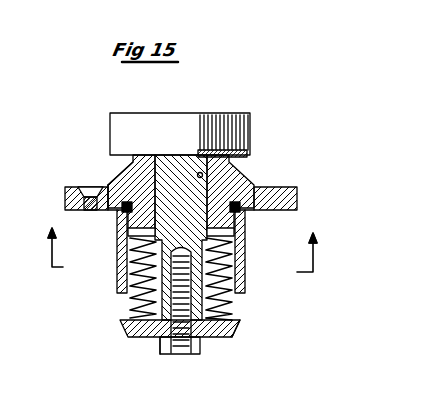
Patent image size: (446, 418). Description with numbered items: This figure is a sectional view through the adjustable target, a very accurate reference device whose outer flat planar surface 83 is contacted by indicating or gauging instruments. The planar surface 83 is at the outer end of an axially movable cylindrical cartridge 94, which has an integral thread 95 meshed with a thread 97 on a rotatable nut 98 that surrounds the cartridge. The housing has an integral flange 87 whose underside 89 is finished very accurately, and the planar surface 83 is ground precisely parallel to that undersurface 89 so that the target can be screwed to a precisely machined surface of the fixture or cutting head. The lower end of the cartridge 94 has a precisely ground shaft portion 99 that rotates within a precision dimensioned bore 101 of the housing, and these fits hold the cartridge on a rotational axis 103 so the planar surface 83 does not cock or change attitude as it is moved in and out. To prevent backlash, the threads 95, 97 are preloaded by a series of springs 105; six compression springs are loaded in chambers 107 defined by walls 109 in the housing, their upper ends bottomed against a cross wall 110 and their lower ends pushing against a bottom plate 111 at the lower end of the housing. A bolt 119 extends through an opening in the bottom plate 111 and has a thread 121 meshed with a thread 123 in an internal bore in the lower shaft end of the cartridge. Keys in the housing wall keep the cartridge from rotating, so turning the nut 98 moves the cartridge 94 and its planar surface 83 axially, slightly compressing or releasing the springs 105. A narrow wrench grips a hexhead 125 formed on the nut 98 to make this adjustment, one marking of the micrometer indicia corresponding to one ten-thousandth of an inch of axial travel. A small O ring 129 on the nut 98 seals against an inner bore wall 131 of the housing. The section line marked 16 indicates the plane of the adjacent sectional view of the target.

The outer flat planar surface 83 is at (148, 113).
The cylindrical cartridge 94 is at (186, 170).
The rotational axis 103 is at (180, 165).
The bolt 119 is at (174, 354).
The rotatable nut 98 is at (137, 178).
The thread 95 is at (223, 162).
The hexhead 125 is at (127, 162).
The thread 97 is at (127, 177).
The underside of the flange 89 is at (70, 210).
The flange 87 is at (280, 188).
The cross wall 110 is at (120, 243).
The bore 101 is at (233, 242).
The inner bore wall 131 is at (122, 221).
The O ring 129 is at (237, 217).
The shaft portion 99 is at (130, 268).
The walls 109 is at (240, 285).
The chambers 107 is at (130, 295).
The springs 105 is at (227, 310).
The bottom plate 111 is at (227, 325).
The thread 121 is at (200, 337).
The thread 123 is at (158, 333).
The section line 16- 16 is at (182, 264).